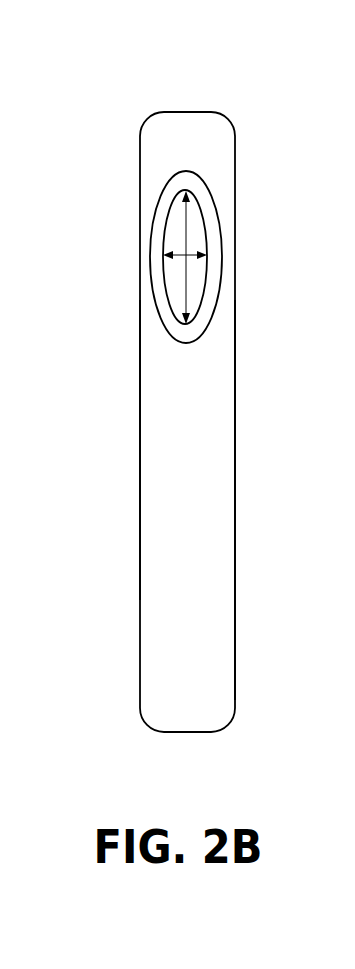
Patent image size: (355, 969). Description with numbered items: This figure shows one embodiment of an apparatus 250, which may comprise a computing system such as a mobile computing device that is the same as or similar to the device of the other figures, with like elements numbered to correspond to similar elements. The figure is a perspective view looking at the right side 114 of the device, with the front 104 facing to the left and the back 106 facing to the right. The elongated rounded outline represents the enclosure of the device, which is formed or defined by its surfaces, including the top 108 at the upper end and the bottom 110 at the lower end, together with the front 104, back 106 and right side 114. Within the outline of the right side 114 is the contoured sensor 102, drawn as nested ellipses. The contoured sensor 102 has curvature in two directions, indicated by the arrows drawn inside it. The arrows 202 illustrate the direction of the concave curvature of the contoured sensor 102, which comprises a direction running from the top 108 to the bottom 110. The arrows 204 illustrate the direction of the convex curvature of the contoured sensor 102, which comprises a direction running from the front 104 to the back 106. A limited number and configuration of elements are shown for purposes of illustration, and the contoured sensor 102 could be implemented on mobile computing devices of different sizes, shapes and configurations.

The apparatus 250 is at (170, 57).
The top 108 is at (195, 110).
The bottom 110 is at (178, 732).
The front 104 is at (138, 445).
The back 106 is at (235, 649).
The right 114 is at (187, 427).
The contoured sensor 102 is at (195, 343).
The arrows 202 is at (185, 213).
The arrows 204 is at (192, 257).